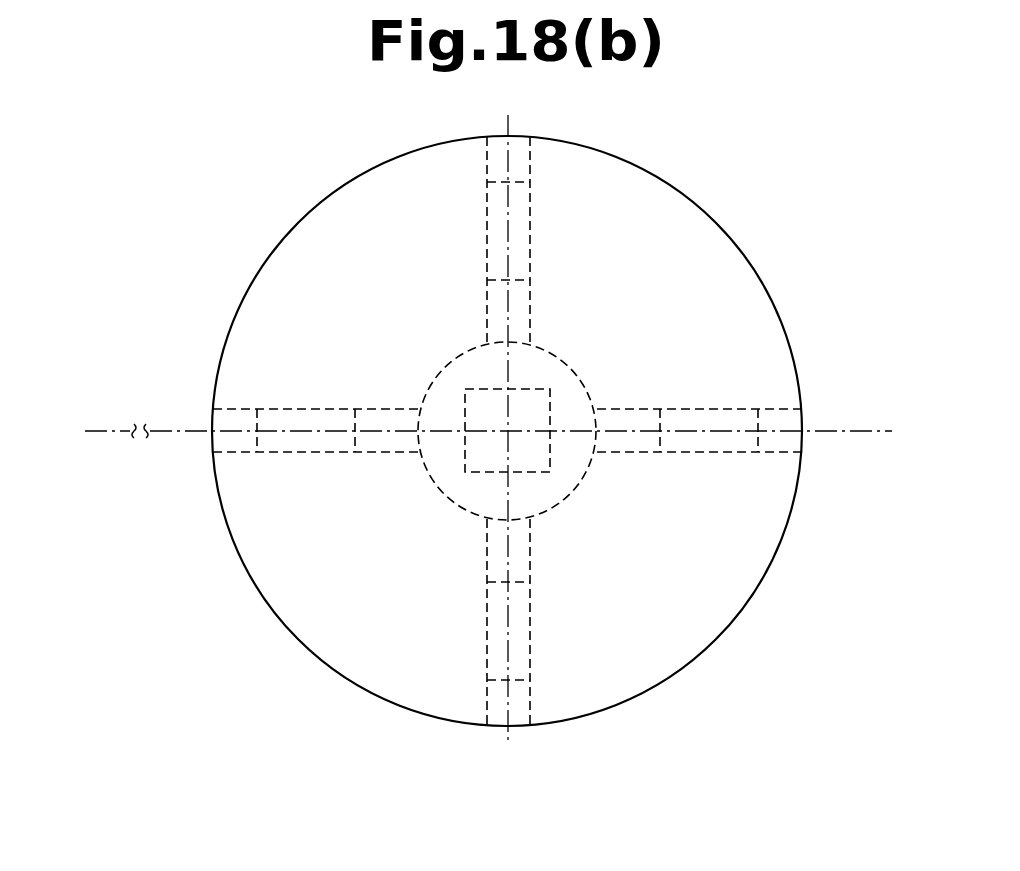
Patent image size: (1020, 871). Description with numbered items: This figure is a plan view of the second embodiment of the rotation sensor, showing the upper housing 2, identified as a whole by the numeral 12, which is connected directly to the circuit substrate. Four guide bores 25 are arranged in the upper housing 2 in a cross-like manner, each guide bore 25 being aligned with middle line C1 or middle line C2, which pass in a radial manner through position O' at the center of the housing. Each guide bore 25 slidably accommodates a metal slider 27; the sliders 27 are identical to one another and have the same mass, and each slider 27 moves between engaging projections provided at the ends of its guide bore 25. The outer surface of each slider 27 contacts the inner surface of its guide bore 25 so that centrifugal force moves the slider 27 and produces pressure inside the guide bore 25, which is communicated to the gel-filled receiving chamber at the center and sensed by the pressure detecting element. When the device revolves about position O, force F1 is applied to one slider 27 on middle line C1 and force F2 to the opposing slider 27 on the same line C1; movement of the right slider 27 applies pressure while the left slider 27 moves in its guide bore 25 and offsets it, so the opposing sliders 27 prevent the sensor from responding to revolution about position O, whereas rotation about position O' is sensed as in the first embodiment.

The upper housing 2 is at (632, 172).
The rotor assembly 12 is at (522, 411).
The guide bore 25 is at (522, 208).
The metal slider 27 is at (531, 237).
The middle line C1 is at (322, 428).
The middle line C2 is at (508, 302).
The position O is at (86, 409).
The position O' is at (452, 483).
The force F1 is at (830, 371).
The force F2 is at (258, 371).